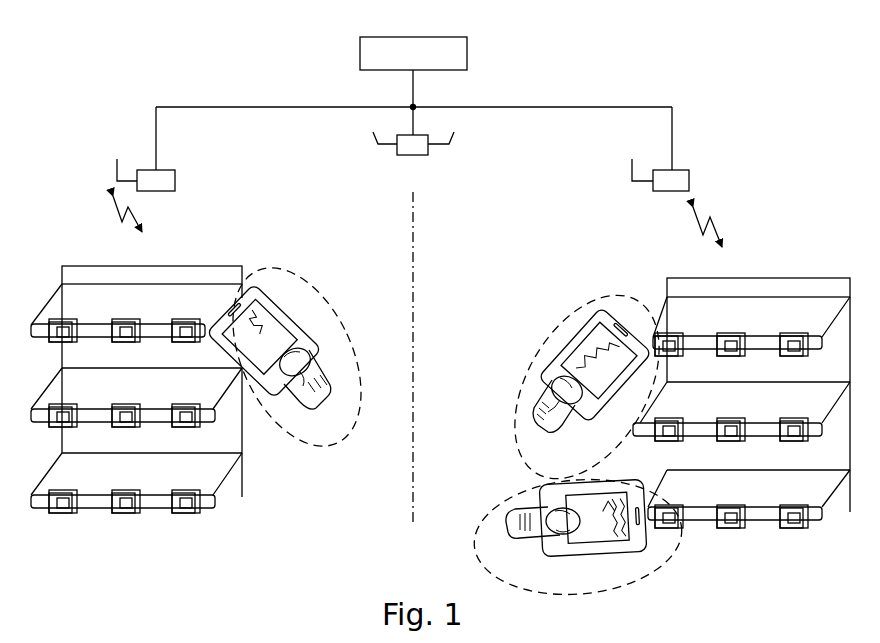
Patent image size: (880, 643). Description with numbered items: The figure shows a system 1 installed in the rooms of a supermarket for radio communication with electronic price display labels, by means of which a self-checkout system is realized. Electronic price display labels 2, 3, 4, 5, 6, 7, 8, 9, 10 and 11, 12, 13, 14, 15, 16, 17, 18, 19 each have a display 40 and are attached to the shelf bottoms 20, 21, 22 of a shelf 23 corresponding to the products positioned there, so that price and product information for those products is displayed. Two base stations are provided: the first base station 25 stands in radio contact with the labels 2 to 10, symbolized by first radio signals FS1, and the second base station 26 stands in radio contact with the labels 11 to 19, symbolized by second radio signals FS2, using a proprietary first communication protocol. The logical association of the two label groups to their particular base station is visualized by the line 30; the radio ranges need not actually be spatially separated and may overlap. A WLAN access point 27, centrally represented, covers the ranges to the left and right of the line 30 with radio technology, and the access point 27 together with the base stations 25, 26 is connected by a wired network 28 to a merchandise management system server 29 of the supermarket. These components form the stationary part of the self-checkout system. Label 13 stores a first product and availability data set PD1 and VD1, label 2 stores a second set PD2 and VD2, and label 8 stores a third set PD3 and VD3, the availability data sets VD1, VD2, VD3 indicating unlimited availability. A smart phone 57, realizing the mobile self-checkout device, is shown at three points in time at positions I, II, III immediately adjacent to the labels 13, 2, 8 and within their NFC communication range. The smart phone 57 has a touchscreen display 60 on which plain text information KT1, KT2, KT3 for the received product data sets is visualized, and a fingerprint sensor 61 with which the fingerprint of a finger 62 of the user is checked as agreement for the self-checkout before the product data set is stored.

The system 1 is at (762, 62).
The electronic price display label 2 is at (666, 334).
The electronic price display label 3 is at (728, 334).
The electronic price display label 4 is at (790, 334).
The electronic price display label 5 is at (666, 419).
The electronic price display label 6 is at (728, 419).
The electronic price display label 7 is at (790, 419).
The electronic price display label 8 is at (666, 506).
The electronic price display label 9 is at (728, 506).
The electronic price display label 10 is at (790, 506).
The electronic price display label 11 is at (62, 320).
The electronic price display label 12 is at (125, 320).
The electronic price display label 13 is at (186, 320).
The electronic price display label 14 is at (62, 405).
The electronic price display label 15 is at (125, 405).
The electronic price display label 16 is at (186, 405).
The electronic price display label 17 is at (62, 491).
The electronic price display label 18 is at (125, 491).
The electronic price display label 19 is at (186, 491).
The shelf bottom 20 is at (49, 300).
The shelf bottom 21 is at (47, 392).
The shelf bottom 22 is at (47, 478).
The shelf 23 is at (228, 264).
The first base station 25 is at (693, 168).
The second base station 26 is at (178, 168).
The access point 27 is at (437, 158).
The wired network 28 is at (567, 107).
The merchandise management system server 29 is at (467, 50).
The line 30 is at (417, 207).
The display 40 is at (63, 343).
The smart phone 57 is at (289, 404).
The touchscreen display 60 is at (292, 318).
The fingerprint sensor 61 is at (322, 351).
The finger 62 is at (322, 404).
The position I is at (316, 452).
The position II is at (563, 314).
The position III is at (473, 530).
The plain text information KT1 is at (268, 306).
The plain text information KT2 is at (578, 334).
The plain text information KT3 is at (610, 540).
The first availability data set VD1 is at (175, 311).
The first product data set PD1 is at (188, 311).
The second availability data set VD2 is at (658, 328).
The second product data set PD2 is at (672, 330).
The third availability data set VD3 is at (684, 534).
The third product data set PD3 is at (690, 520).
The first radio signals FS1 is at (722, 228).
The second radio signals FS2 is at (142, 220).